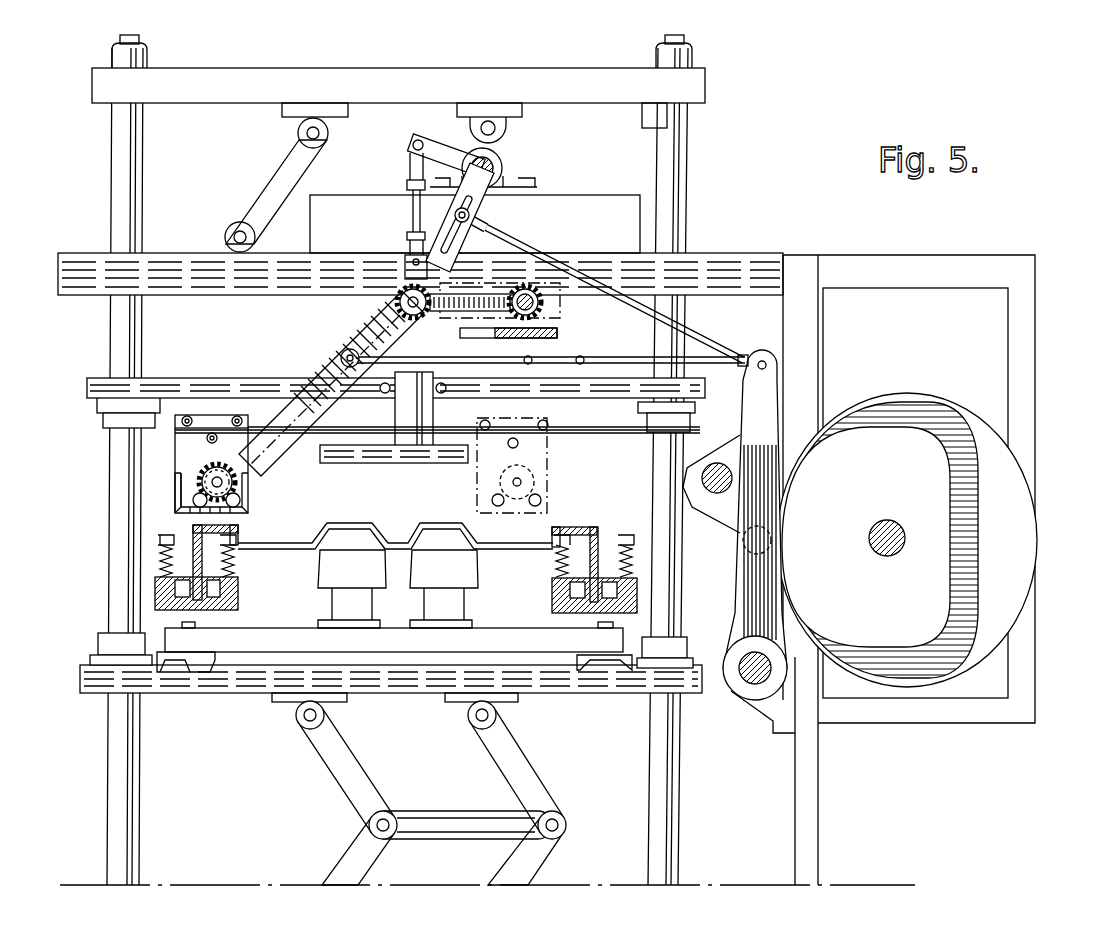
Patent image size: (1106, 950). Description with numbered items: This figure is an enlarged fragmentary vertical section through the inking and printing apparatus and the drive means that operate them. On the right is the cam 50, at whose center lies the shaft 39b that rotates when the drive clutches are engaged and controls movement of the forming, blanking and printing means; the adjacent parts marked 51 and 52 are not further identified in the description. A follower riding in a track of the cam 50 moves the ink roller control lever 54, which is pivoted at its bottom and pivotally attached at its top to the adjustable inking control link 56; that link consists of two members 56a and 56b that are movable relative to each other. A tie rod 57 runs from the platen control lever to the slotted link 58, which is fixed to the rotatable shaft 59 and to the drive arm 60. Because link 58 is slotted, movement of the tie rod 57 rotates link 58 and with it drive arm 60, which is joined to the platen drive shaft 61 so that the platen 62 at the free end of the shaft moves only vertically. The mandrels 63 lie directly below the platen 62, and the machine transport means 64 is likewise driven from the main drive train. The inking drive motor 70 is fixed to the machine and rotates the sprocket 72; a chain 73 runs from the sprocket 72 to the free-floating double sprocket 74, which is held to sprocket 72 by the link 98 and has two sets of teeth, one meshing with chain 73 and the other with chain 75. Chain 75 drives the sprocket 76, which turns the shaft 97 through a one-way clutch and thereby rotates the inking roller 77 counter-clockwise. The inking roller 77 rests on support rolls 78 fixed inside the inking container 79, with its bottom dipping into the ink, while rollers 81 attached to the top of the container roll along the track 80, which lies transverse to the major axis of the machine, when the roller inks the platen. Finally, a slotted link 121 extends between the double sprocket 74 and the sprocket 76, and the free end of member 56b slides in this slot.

The cam 50 is at (930, 543).
The cam track rim 51 is at (942, 652).
The cam follower 52 is at (776, 552).
The shaft 39b is at (905, 548).
The ink roller control lever 54 is at (791, 521).
The adjustable inking control link 56 is at (627, 358).
The member of inking control link 56a is at (723, 363).
The member of inking control link 56b is at (477, 364).
The tie rod 57 is at (722, 347).
The slotted link 58 is at (473, 203).
The shaft 59 is at (495, 166).
The drive arm 60 is at (418, 137).
The platen drive shaft 61 is at (410, 220).
The platen 62 is at (335, 453).
The mandrels 63 is at (332, 597).
The machine transport means 64 is at (240, 528).
The inking drive motor 70 is at (618, 292).
The sprocket 72 is at (530, 272).
The chain 73 is at (462, 294).
The double sprocket 74 is at (398, 296).
The chain 75 is at (370, 324).
The sprocket 76 is at (176, 479).
The inking roller 77 is at (217, 474).
The support rolls 78 is at (197, 503).
The inking container 79 is at (178, 464).
The track 80 is at (307, 434).
The rollers 81 is at (238, 412).
The shaft 97 is at (223, 483).
The link 98 is at (461, 305).
The slotted link 121 is at (317, 375).